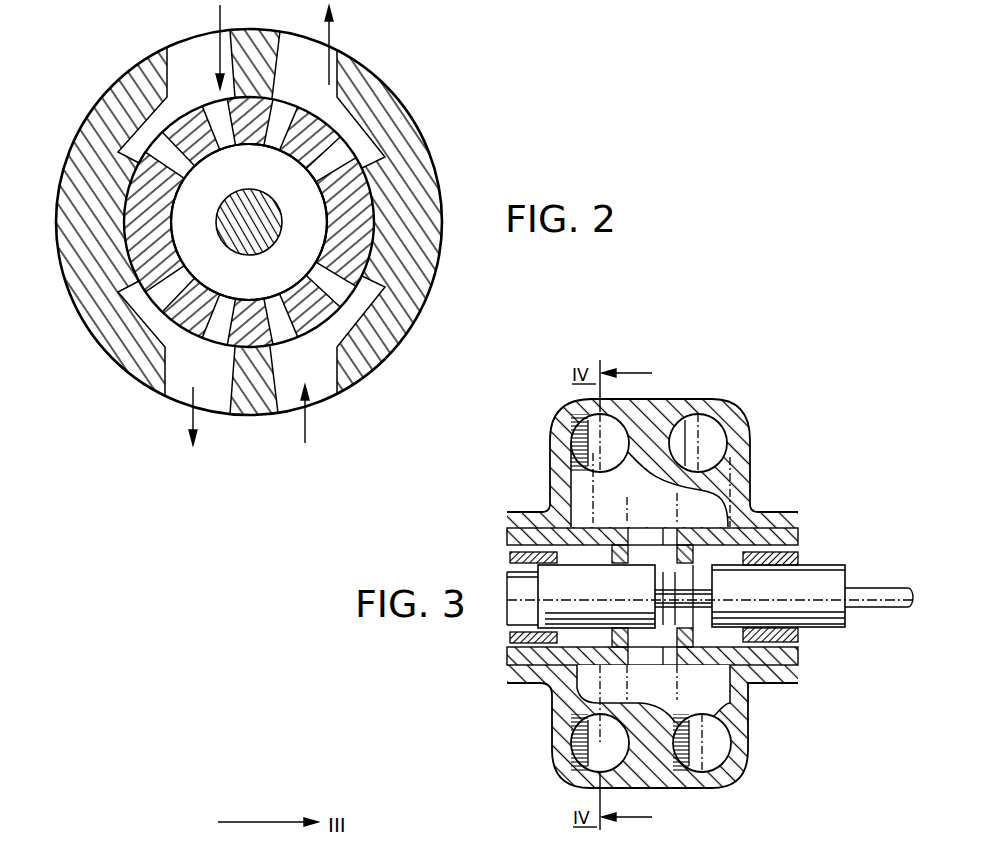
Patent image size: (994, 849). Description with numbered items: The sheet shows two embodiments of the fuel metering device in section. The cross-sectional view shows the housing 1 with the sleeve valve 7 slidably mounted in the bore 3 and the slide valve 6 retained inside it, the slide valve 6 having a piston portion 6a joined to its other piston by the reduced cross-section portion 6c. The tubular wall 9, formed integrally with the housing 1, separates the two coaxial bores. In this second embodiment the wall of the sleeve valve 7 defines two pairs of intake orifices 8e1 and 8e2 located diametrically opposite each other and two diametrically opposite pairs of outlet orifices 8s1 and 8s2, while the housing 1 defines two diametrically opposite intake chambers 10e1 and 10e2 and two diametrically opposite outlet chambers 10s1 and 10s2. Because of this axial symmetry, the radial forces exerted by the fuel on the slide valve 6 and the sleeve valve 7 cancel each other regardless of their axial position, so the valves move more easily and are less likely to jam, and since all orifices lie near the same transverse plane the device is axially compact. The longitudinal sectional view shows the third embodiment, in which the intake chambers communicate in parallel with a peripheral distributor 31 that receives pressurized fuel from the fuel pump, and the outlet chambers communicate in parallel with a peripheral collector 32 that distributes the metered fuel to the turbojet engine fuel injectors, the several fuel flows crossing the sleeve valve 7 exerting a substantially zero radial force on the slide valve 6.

In FIG. 2, the housing 1 is at (93, 231).
In FIG. 3, the housing 1 is at (653, 428).
In FIG. 3, the bore 3 is at (658, 760).
In FIG. 3, the slide valve 6 is at (810, 580).
In FIG. 2, the piston portion 6a is at (303, 252).
In FIG. 2, the reduced cross-section portion 6c is at (270, 230).
In FIG. 3, the reduced cross-section portion 6c is at (725, 593).
In FIG. 2, the sleeve valve 7 is at (373, 165).
In FIG. 3, the sleeve valve 7 is at (713, 533).
In FIG. 2, the intake orifice 8e1 is at (217, 117).
In FIG. 3, the intake orifice 8e1 is at (643, 550).
In FIG. 2, the intake orifice 8e2 is at (340, 293).
In FIG. 2, the outlet orifice 8s1 is at (222, 330).
In FIG. 2, the outlet orifice 8s2 is at (333, 150).
In FIG. 3, the outlet orifice 8s2 is at (640, 680).
In FIG. 3, the tubular wall 9 is at (800, 562).
In FIG. 2, the intake chamber 10e1 is at (132, 145).
In FIG. 3, the intake chamber 10e1 is at (653, 506).
In FIG. 2, the intake chamber 10e2 is at (413, 342).
In FIG. 2, the outlet chamber 10s1 is at (143, 320).
In FIG. 2, the outlet chamber 10s2 is at (338, 60).
In FIG. 3, the outlet chamber 10s2 is at (708, 700).
In FIG. 3, the peripheral distributor 31 is at (590, 447).
In FIG. 3, the peripheral collector 32 is at (720, 743).